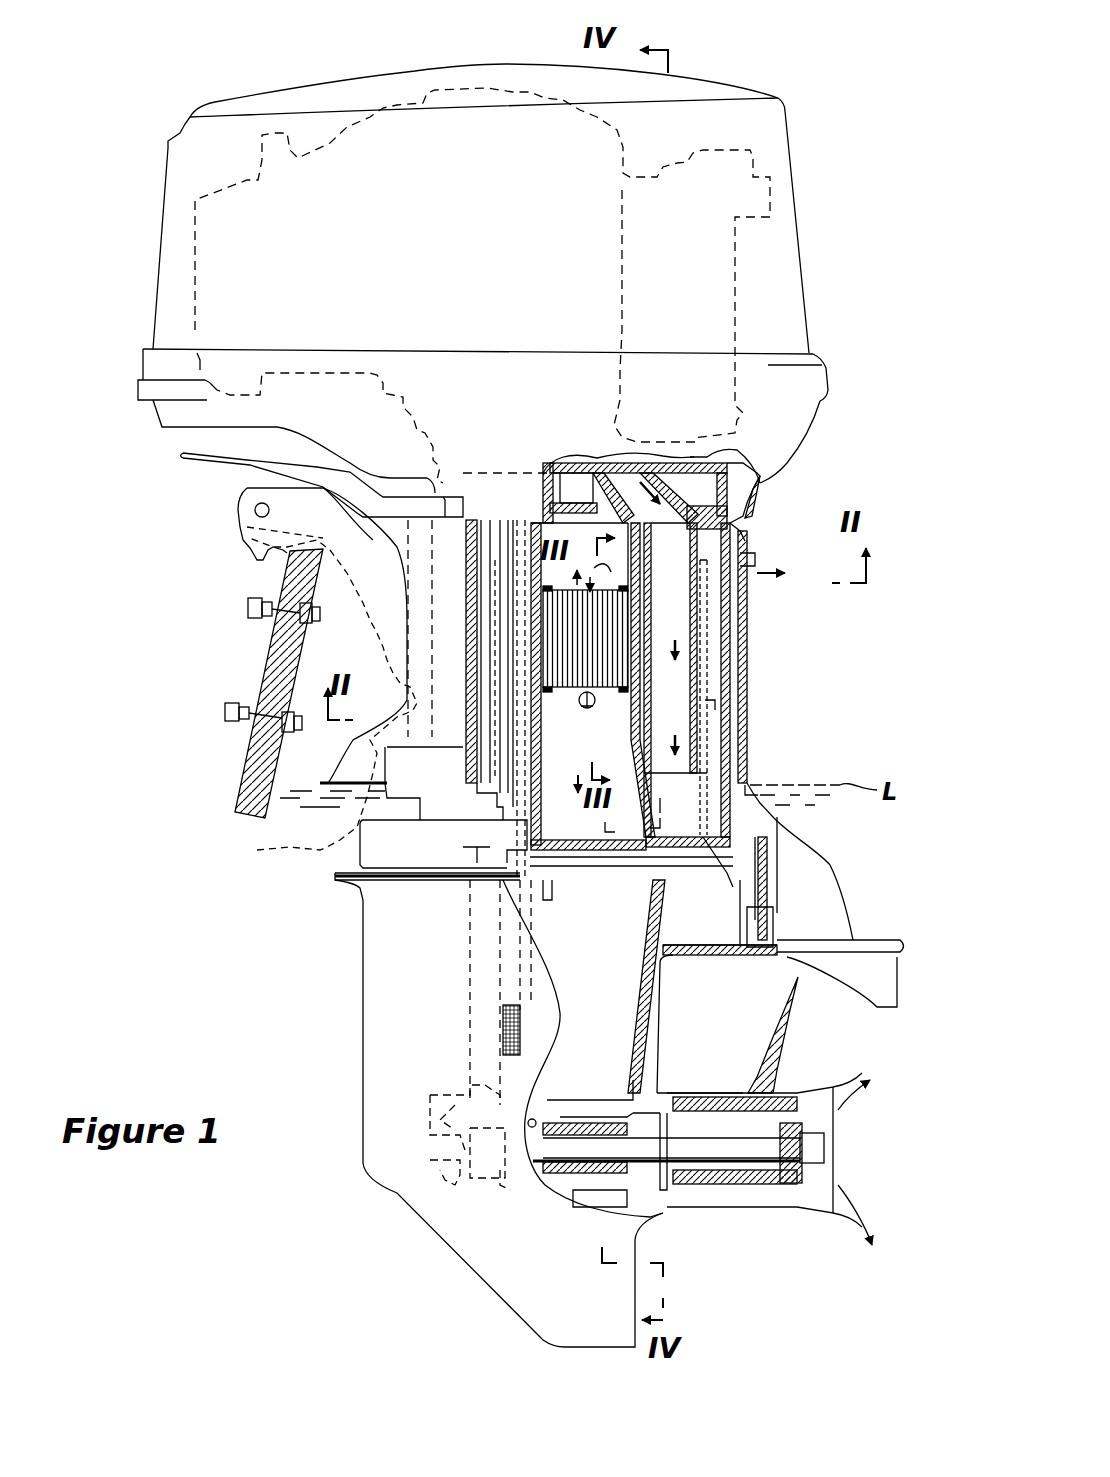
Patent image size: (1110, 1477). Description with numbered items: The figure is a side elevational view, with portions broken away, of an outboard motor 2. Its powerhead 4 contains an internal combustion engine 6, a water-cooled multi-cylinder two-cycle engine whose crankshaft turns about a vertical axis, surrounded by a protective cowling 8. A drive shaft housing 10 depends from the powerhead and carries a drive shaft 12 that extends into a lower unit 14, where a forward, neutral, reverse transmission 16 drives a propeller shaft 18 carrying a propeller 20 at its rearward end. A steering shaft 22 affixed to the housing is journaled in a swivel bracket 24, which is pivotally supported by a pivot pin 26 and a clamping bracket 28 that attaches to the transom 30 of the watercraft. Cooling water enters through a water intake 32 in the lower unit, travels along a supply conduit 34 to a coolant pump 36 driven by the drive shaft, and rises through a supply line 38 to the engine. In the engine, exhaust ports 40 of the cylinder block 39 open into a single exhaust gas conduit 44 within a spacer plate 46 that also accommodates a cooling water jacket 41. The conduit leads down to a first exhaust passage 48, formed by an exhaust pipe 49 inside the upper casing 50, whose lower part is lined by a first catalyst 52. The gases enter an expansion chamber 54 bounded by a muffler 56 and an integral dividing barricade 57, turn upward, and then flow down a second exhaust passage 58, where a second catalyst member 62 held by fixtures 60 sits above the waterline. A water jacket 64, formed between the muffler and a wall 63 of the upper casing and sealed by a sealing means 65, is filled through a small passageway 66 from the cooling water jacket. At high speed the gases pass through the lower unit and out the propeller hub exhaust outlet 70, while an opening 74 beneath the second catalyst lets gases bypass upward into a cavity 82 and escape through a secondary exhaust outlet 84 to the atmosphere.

The outboard motor 2 is at (830, 311).
The powerhead 4 is at (688, 88).
The internal combustion engine 6 is at (788, 172).
The protective cowling 8 is at (148, 328).
The drive shaft housing 10 is at (807, 858).
The drive shaft 12 is at (500, 760).
The lower unit 14 is at (422, 1193).
The forward, neutral, reverse transmission 16 is at (470, 1207).
The propeller shaft 18 is at (583, 1148).
The propeller 20 is at (712, 1207).
The steering shaft 22 is at (290, 847).
The swivel bracket 24 is at (370, 620).
The pivot pin 26 is at (254, 510).
The clamping bracket 28 is at (253, 540).
The transom 30 is at (242, 804).
The water intake 32 is at (517, 1030).
The supply conduit 34 is at (523, 977).
The coolant pump 36 is at (500, 803).
The supply line 38 is at (520, 577).
The cylinder block 39 is at (693, 474).
The exhaust ports 40 is at (630, 462).
The cooling water jacket 41 is at (578, 485).
The exhaust gas conduit 44 is at (653, 470).
The spacer plate 46 is at (757, 486).
The first exhaust passage 48 is at (705, 672).
The exhaust pipe 49 is at (758, 760).
The upper casing 50 is at (732, 658).
The first catalyst 52 is at (722, 815).
The expansion chamber 54 is at (727, 950).
The muffler 56 is at (745, 600).
The dividing barricade 57 is at (594, 703).
The second exhaust passage 58 is at (583, 830).
The fixtures 60 is at (605, 475).
The second catalyst member 62 is at (557, 612).
The wall 63 is at (777, 782).
The water jacket 64 is at (720, 712).
The sealing means 65 is at (580, 828).
The small passageway 66 is at (745, 530).
The exhaust outlet 70 is at (828, 1183).
The opening 74 is at (568, 740).
The cavity 82 is at (748, 630).
The secondary exhaust outlet 84 is at (757, 553).